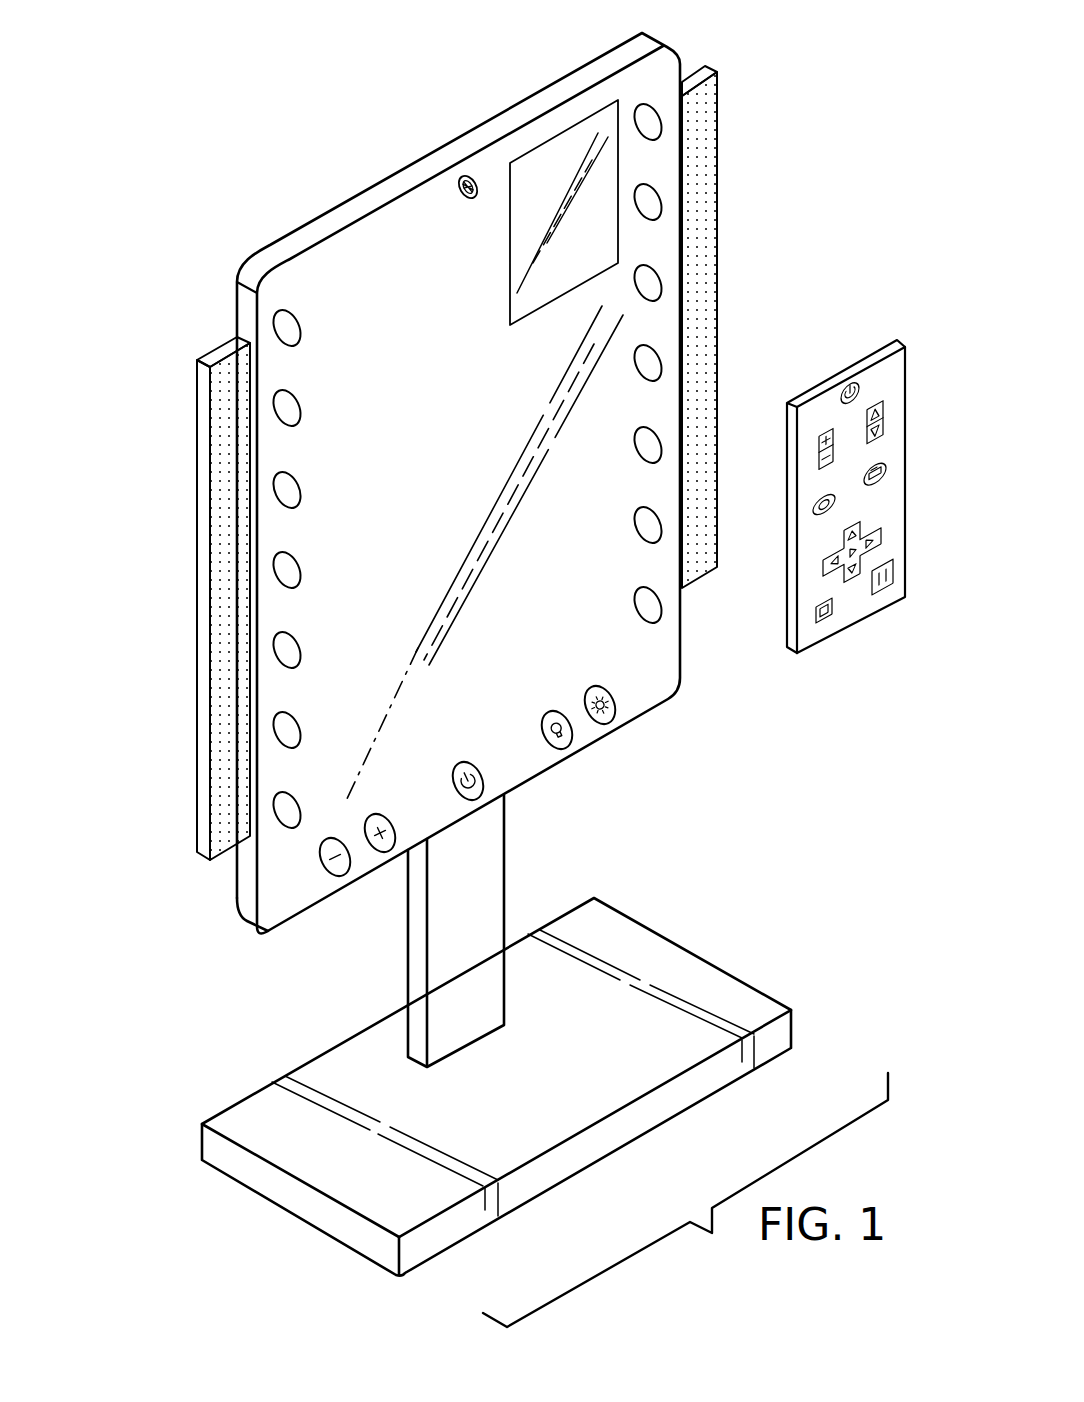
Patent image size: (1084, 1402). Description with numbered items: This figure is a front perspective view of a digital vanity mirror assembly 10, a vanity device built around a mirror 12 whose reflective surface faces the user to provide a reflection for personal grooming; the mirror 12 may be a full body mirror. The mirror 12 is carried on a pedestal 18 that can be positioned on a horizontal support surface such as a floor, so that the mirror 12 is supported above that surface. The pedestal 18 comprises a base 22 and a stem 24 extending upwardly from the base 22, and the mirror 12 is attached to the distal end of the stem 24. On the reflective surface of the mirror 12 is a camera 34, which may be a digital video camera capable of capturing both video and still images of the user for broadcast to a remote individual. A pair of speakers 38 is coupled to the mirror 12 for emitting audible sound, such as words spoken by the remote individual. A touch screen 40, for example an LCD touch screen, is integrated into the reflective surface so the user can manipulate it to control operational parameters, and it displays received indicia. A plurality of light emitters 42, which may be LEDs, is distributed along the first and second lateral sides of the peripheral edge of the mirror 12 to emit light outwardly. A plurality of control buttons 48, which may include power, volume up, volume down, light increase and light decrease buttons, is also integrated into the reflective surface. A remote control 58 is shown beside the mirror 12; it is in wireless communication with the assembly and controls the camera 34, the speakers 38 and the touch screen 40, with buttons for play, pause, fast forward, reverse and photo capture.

The digital vanity mirror assembly 10 is at (826, 124).
The mirror 12 is at (642, 33).
The pedestal 18 is at (651, 896).
The base 22 is at (791, 1010).
The stem 24 is at (407, 926).
The camera 34 is at (460, 180).
The speakers 38 is at (203, 493).
The touch screen 40 is at (555, 137).
The light emitters 42 is at (279, 560).
The control buttons 48 is at (347, 868).
The remote control 58 is at (905, 362).